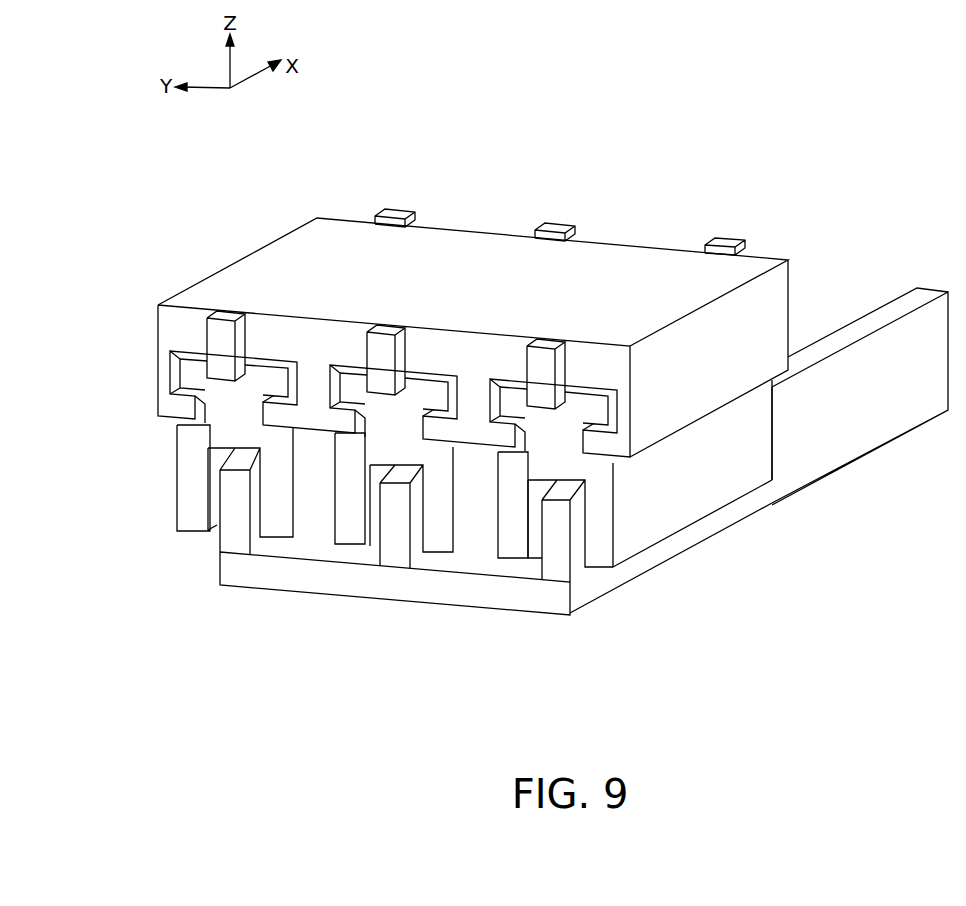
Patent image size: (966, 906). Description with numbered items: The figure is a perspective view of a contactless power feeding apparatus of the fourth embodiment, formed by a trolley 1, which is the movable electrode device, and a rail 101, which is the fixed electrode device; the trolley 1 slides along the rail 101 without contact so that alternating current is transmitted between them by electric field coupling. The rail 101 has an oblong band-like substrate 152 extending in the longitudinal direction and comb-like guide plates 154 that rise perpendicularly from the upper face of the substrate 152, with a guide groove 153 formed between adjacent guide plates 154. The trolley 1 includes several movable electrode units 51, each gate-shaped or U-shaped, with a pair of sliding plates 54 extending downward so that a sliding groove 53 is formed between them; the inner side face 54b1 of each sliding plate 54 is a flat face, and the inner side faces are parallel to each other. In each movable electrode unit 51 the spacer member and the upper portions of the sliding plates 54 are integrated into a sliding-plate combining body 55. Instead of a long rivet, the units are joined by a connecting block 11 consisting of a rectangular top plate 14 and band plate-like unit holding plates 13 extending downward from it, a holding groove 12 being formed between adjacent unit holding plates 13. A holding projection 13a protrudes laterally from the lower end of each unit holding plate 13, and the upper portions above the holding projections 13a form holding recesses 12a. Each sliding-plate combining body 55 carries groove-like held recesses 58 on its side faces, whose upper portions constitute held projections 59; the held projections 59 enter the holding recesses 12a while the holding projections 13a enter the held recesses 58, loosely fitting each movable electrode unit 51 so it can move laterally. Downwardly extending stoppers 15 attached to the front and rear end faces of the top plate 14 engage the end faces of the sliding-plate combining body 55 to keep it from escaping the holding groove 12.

The trolley 1 is at (522, 417).
The connecting block 11 is at (484, 243).
The holding groove 12 is at (175, 353).
The holding recess 12a is at (170, 367).
The unit holding plate 13 is at (313, 348).
The holding projection 13a is at (288, 414).
The top plate 14 is at (667, 252).
The stopper 15 is at (543, 357).
The movable electrode unit 51 is at (757, 423).
The sliding groove 53 is at (538, 487).
The sliding plate 54 is at (677, 510).
The inner side face 54b1 is at (213, 460).
The sliding-plate combining body 55 is at (557, 443).
The held recess 58 is at (437, 447).
The held projection 59 is at (430, 397).
The rail 101 is at (869, 389).
The substrate 152 is at (443, 590).
The guide groove 153 is at (335, 520).
The guide plate 154 is at (893, 313).